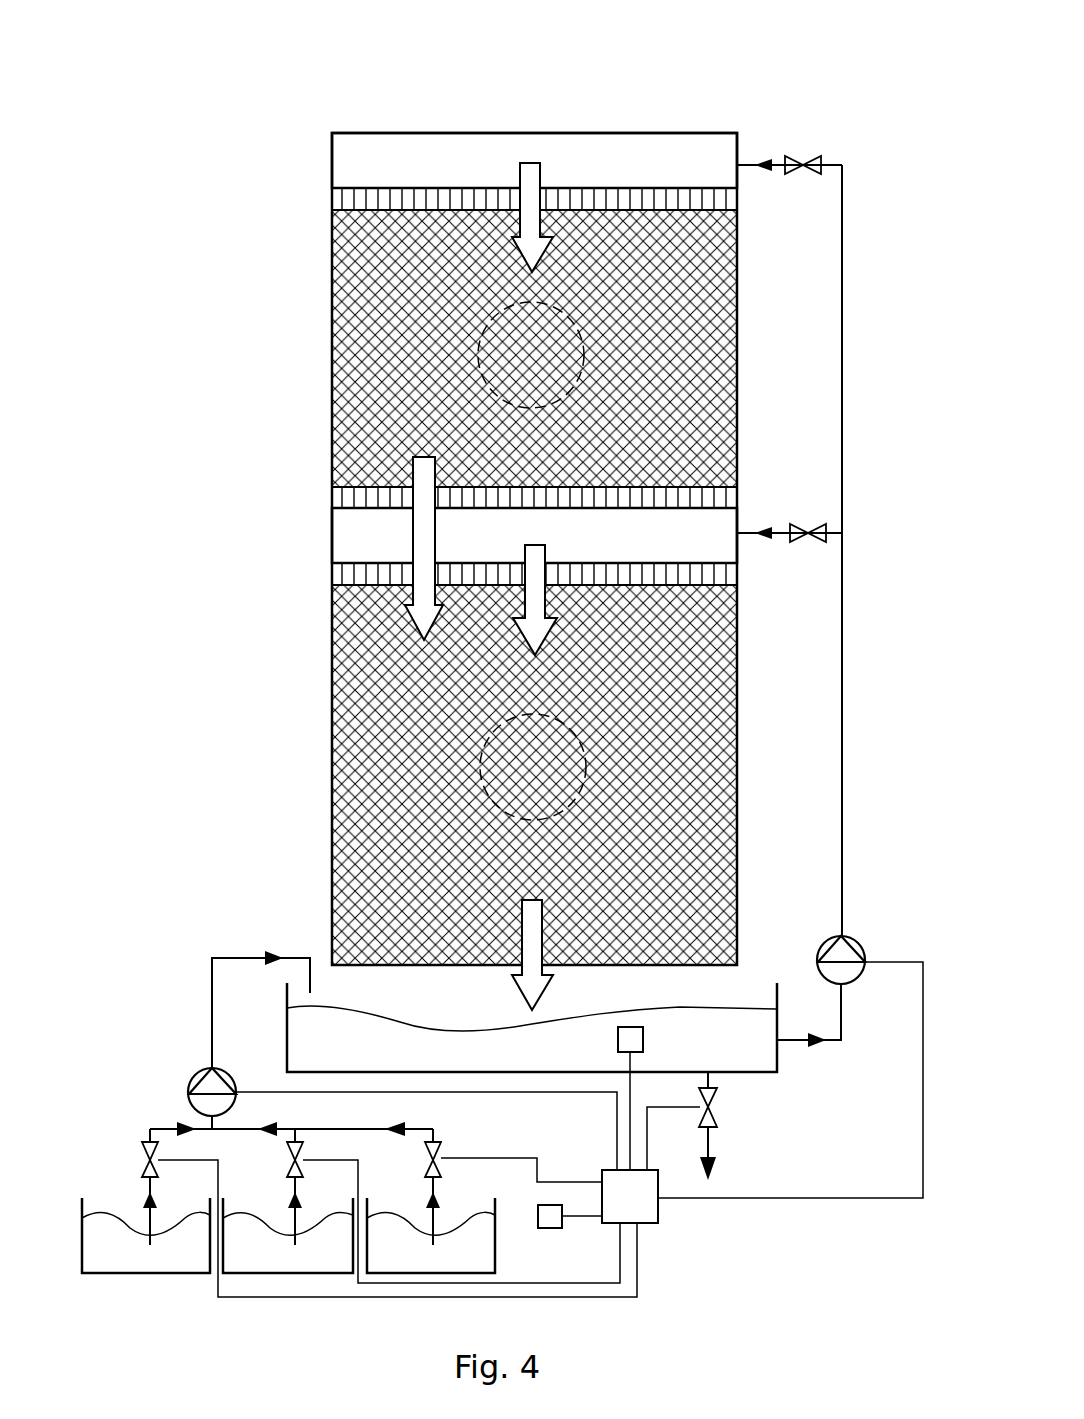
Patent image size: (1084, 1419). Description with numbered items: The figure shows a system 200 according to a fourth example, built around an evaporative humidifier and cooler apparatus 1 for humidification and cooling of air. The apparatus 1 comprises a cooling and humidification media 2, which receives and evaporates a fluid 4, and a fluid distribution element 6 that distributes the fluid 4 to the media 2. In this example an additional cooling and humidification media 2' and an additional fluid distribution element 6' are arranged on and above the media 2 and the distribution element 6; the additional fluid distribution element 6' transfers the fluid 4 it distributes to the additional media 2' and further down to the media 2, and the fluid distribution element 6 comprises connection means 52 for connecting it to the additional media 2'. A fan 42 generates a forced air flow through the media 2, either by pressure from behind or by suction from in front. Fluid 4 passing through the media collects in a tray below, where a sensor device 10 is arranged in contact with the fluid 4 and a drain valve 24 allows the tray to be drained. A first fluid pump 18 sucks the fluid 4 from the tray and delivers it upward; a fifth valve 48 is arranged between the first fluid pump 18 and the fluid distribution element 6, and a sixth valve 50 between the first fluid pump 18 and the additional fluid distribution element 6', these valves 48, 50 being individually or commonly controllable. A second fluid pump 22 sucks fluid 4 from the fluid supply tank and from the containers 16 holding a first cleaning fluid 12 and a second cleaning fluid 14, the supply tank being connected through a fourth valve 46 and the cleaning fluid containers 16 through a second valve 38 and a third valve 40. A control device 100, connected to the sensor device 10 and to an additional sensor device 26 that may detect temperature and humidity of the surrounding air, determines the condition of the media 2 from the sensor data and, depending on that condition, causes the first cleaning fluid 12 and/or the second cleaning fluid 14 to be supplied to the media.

The evaporative humidifier and cooler apparatus 1 is at (498, 80).
The system 200 is at (838, 90).
The additional fluid distribution element 6' is at (463, 160).
The fluid distribution element 6 is at (460, 541).
The connection means 52 is at (338, 497).
The additional cooling and humidification media 2' is at (458, 348).
The cooling and humidification media 2 is at (459, 775).
The fan 42 is at (485, 385).
The sixth valve 50 is at (820, 177).
The fifth valve 48 is at (827, 527).
The first fluid pump 18 is at (855, 945).
The fluid 4 is at (458, 1048).
The sensor device 10 is at (643, 1035).
The second fluid pump 22 is at (193, 1066).
The fourth valve 46 is at (142, 1140).
The second valve 38 is at (303, 1170).
The third valve 40 is at (443, 1177).
The container 16 is at (118, 1273).
The first cleaning fluid 12 is at (250, 1245).
The second cleaning fluid 14 is at (392, 1243).
The control device 100 is at (600, 1170).
The additional sensor device 26 is at (562, 1228).
The drain valve 24 is at (717, 1120).